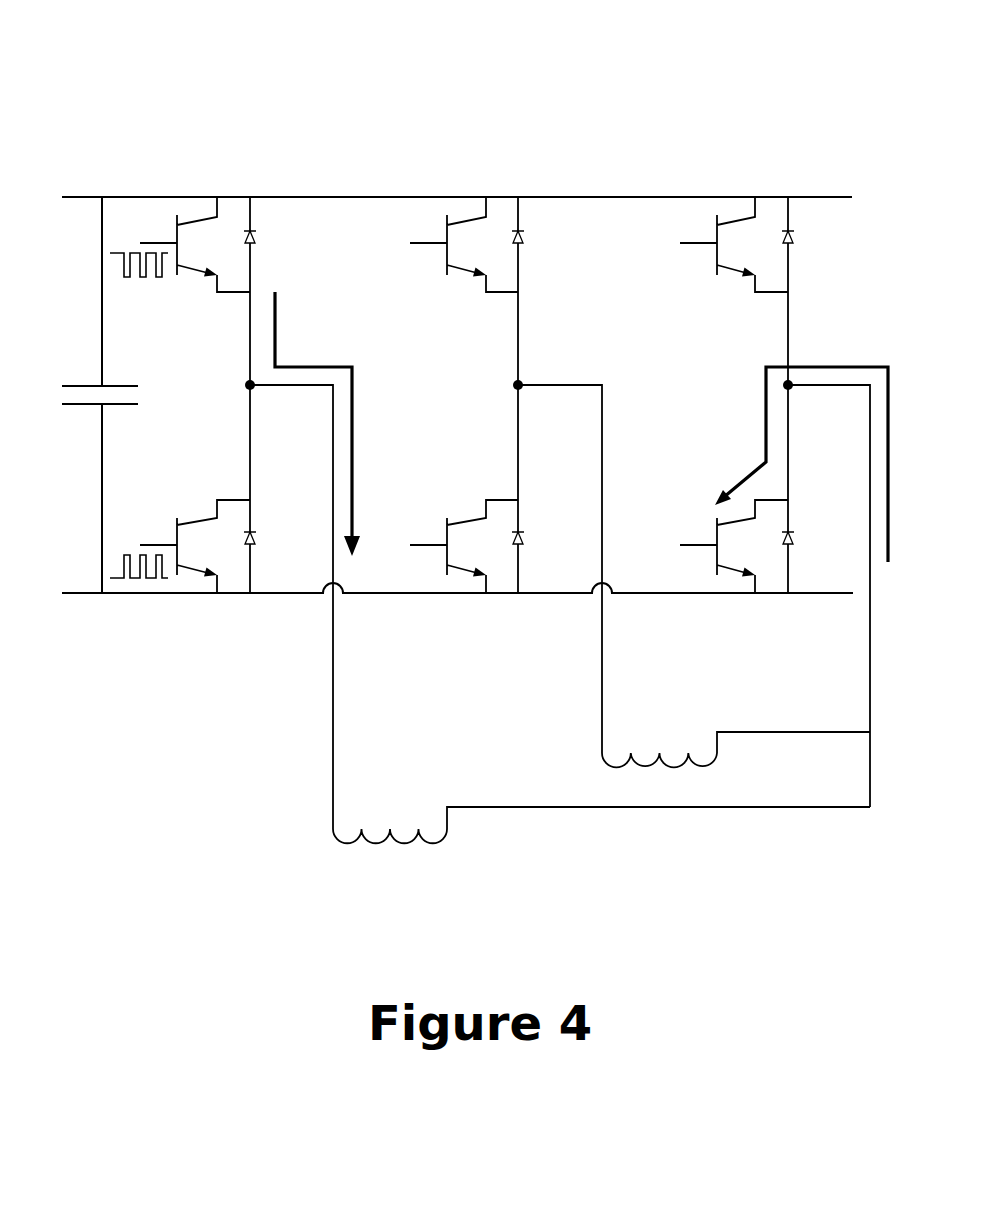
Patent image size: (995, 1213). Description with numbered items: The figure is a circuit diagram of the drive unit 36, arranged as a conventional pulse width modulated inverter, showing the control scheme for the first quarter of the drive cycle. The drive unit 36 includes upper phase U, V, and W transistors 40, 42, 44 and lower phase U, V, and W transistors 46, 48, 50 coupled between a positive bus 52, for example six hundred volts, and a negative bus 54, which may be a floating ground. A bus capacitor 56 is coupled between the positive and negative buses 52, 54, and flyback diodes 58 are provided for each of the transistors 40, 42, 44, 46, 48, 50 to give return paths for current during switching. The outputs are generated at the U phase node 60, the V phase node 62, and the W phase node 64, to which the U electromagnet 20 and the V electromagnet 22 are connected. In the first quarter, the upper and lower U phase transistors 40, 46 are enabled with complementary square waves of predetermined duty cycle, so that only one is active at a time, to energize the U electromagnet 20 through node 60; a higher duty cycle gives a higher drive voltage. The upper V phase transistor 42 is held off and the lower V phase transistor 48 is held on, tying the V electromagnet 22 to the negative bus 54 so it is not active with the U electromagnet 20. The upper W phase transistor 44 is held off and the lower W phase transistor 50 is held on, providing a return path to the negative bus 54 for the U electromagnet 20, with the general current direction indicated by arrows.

The drive unit 36 is at (93, 79).
The positive bus 52 is at (138, 197).
The negative bus 54 is at (138, 595).
The bus capacitor 56 is at (82, 407).
The upper phase U transistor 40 is at (177, 263).
The upper phase V transistor 42 is at (447, 263).
The upper phase W transistor 44 is at (717, 263).
The lower phase U transistor 46 is at (177, 535).
The lower phase V transistor 48 is at (447, 535).
The lower phase W transistor 50 is at (715, 535).
The flyback diode 58 is at (256, 235).
The node 60 is at (247, 390).
The node 62 is at (515, 390).
The node 64 is at (787, 388).
The U electromagnet 20 is at (332, 838).
The V electromagnet 22 is at (603, 760).